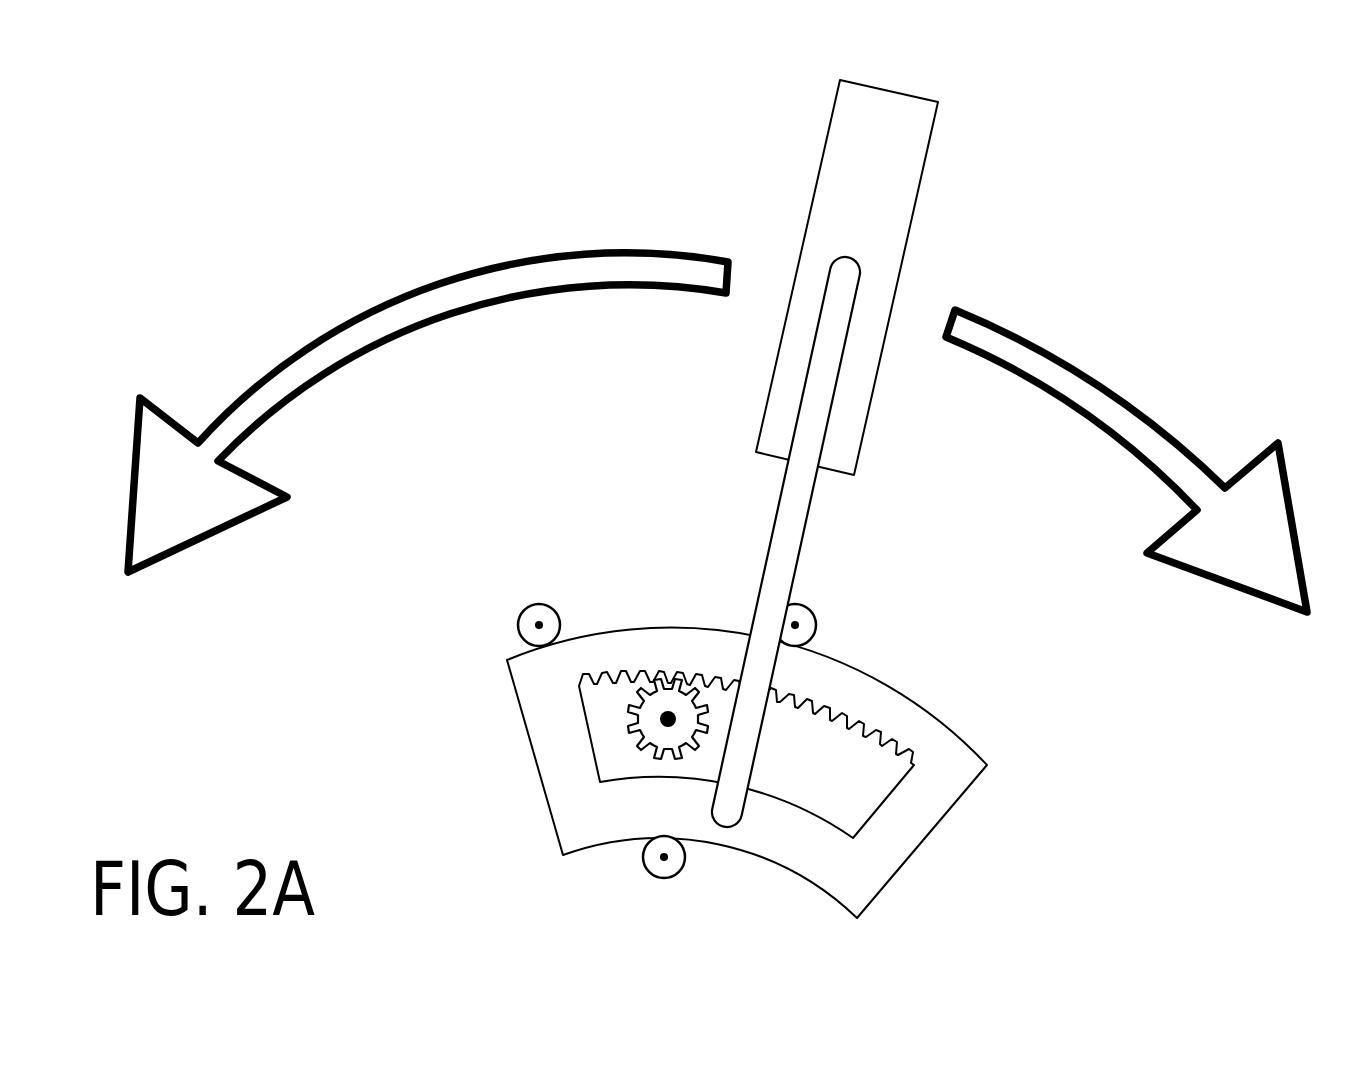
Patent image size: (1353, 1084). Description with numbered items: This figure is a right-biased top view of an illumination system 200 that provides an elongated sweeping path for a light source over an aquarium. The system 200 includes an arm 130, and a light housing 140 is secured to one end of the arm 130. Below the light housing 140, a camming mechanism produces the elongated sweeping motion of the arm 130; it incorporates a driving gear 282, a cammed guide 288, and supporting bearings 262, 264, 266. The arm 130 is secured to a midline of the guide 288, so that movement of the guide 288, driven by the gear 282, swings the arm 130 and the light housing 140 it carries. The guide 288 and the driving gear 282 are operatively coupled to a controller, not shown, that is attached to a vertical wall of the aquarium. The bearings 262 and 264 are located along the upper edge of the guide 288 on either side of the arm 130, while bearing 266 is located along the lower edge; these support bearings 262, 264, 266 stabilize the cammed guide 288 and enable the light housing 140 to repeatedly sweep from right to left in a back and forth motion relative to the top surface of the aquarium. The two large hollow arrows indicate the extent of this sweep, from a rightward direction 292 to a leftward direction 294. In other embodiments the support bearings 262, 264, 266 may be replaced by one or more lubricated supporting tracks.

The illumination system 200 is at (1160, 186).
The light housing 140 is at (818, 157).
The arm 130 is at (765, 565).
The cammed guide 288 is at (967, 795).
The driving gear 282 is at (625, 720).
The supporting bearing 264 is at (539, 603).
The supporting bearing 262 is at (816, 623).
The supporting bearing 266 is at (658, 878).
The leftward direction 294 is at (278, 362).
The rightward direction 292 is at (1147, 407).